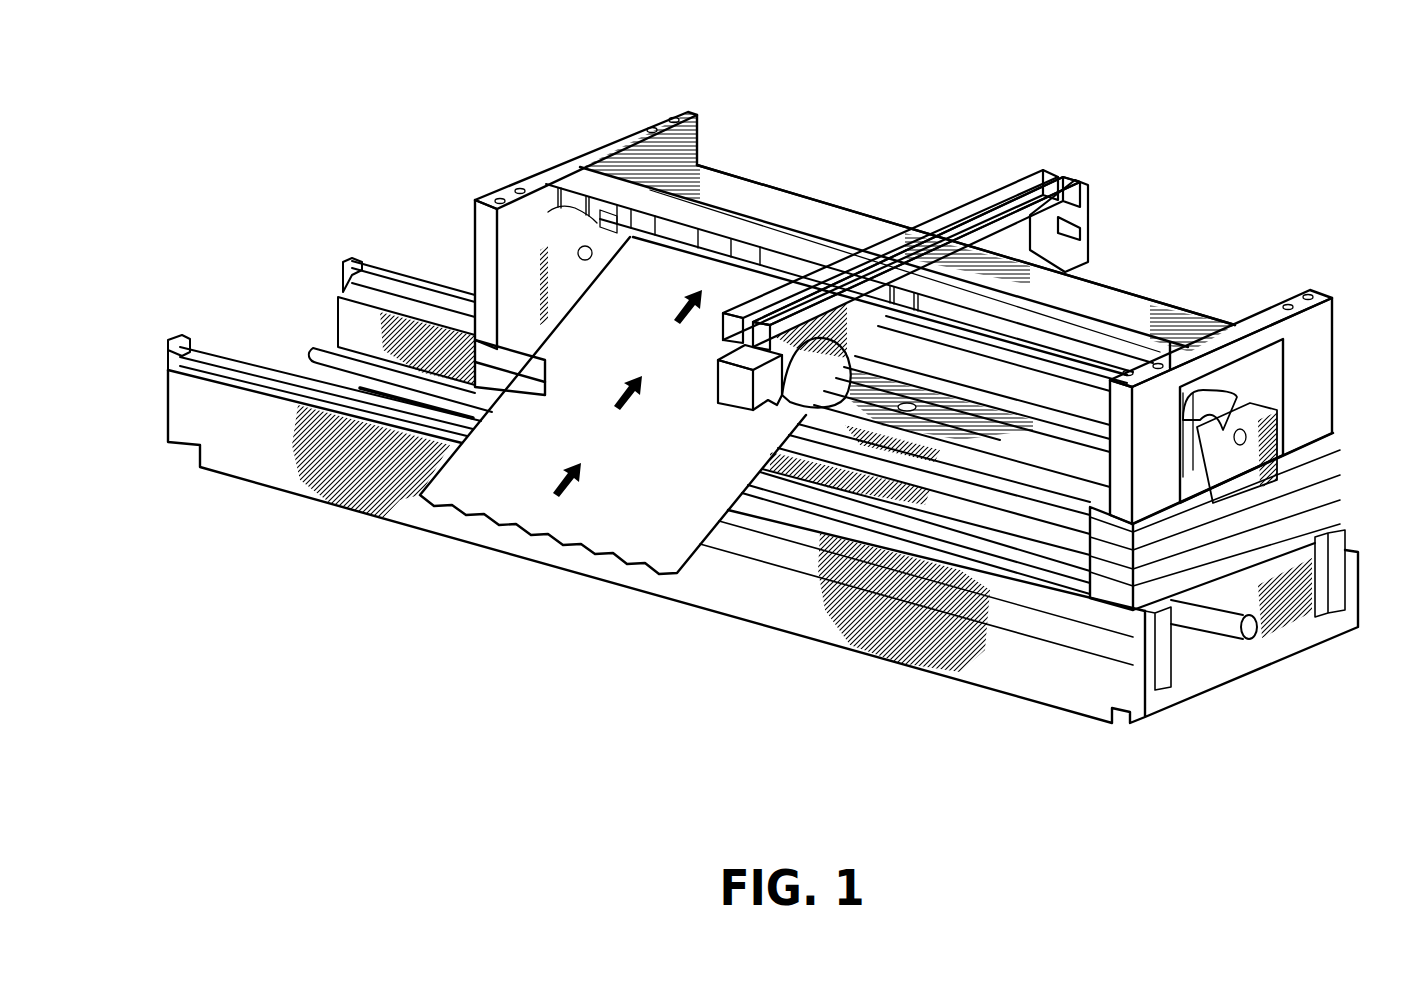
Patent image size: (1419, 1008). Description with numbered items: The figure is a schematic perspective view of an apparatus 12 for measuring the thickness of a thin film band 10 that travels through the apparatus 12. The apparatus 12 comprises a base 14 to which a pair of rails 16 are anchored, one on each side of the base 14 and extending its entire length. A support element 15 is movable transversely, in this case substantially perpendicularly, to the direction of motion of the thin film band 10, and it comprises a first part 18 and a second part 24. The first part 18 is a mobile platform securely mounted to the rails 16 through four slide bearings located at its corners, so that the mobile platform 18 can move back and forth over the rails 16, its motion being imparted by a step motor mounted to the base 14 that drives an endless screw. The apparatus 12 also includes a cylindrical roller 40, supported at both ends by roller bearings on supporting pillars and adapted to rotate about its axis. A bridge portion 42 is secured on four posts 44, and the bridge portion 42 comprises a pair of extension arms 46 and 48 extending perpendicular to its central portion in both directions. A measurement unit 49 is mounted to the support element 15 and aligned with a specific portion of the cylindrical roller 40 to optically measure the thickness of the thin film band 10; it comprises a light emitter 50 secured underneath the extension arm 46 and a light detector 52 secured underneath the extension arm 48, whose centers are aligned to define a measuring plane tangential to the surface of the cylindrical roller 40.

The thin film band 10 is at (527, 453).
The apparatus 12 is at (452, 108).
The base 14 is at (197, 412).
The support element 15 is at (470, 263).
The rails 16 is at (250, 362).
The first part (mobile platform) 18 is at (1033, 520).
The second part 24 is at (993, 470).
The cylindrical roller 40 is at (1060, 377).
The bridge portion 42 is at (1087, 297).
The posts 44 is at (1317, 363).
The extension arm 46 is at (842, 307).
The extension arm 48 is at (1005, 232).
The measurement unit 49 is at (1125, 208).
The light emitter 50 is at (812, 373).
The light detector 52 is at (1055, 255).